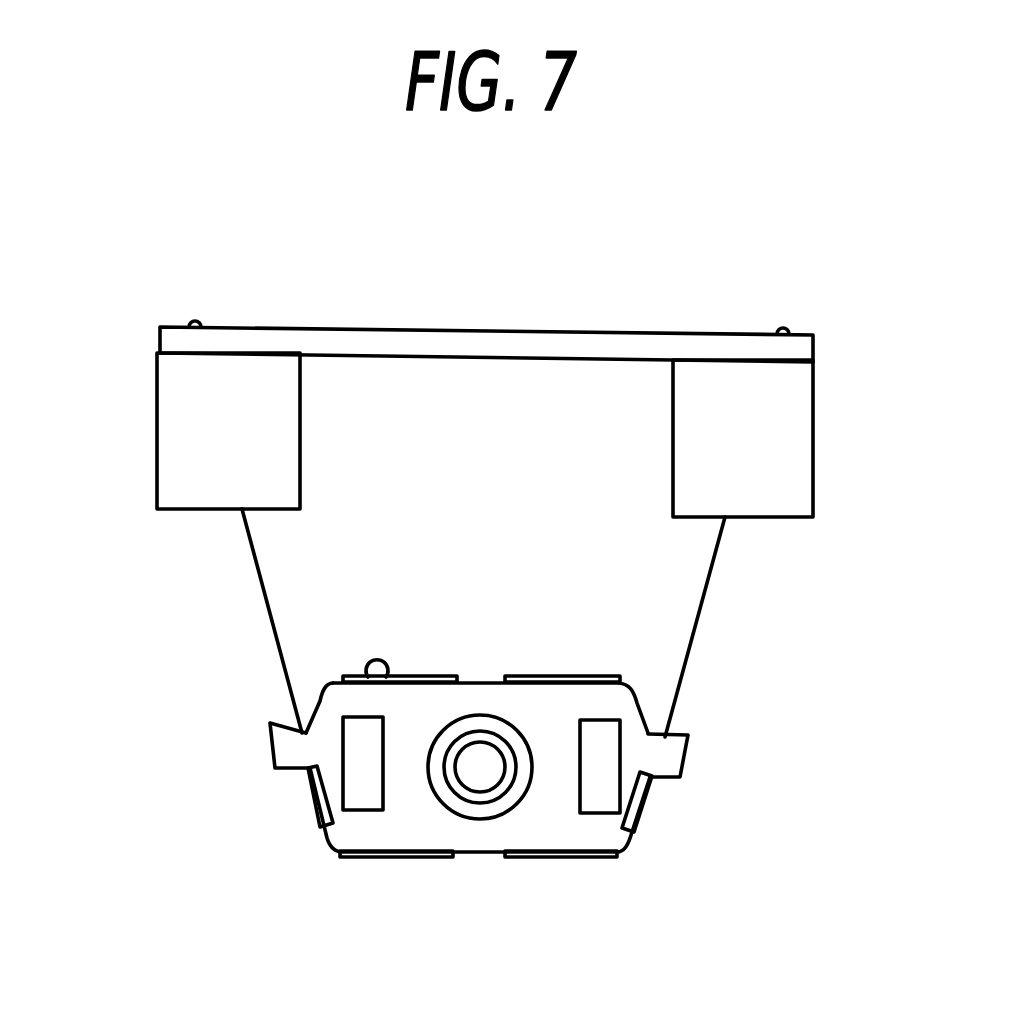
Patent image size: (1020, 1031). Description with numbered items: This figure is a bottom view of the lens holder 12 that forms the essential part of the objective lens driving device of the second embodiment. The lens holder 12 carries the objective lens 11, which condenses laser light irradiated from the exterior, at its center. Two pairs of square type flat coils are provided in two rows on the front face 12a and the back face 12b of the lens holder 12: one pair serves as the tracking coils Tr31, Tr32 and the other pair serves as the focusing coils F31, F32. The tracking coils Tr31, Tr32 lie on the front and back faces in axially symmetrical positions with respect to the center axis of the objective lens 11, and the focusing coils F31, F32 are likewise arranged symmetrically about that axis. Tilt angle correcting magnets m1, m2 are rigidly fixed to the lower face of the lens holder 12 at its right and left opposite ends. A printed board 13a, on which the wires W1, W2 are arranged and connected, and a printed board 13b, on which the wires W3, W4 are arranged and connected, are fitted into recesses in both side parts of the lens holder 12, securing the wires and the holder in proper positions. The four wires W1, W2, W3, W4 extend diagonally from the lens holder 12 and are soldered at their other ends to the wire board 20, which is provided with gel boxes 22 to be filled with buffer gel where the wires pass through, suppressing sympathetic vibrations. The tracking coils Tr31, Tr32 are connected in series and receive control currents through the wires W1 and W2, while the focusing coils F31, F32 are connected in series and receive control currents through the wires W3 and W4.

The wire board 20 is at (486, 282).
The gel boxes 22 is at (482, 435).
The wire W1 is at (237, 621).
The wire W2 is at (272, 621).
The wire W3 is at (777, 627).
The wire W4 is at (695, 627).
The lens holder 12 is at (442, 797).
The front face 12a is at (571, 801).
The back face 12b is at (397, 735).
The objective lens 11 is at (499, 750).
The tilt angle correcting magnet m1 is at (261, 756).
The tilt angle correcting magnet m2 is at (707, 733).
The printed board 13a is at (691, 805).
The printed board 13b is at (256, 802).
The tracking coil Tr31 is at (561, 917).
The tracking coil Tr32 is at (404, 622).
The focusing coil F31 is at (390, 916).
The focusing coil F32 is at (562, 626).